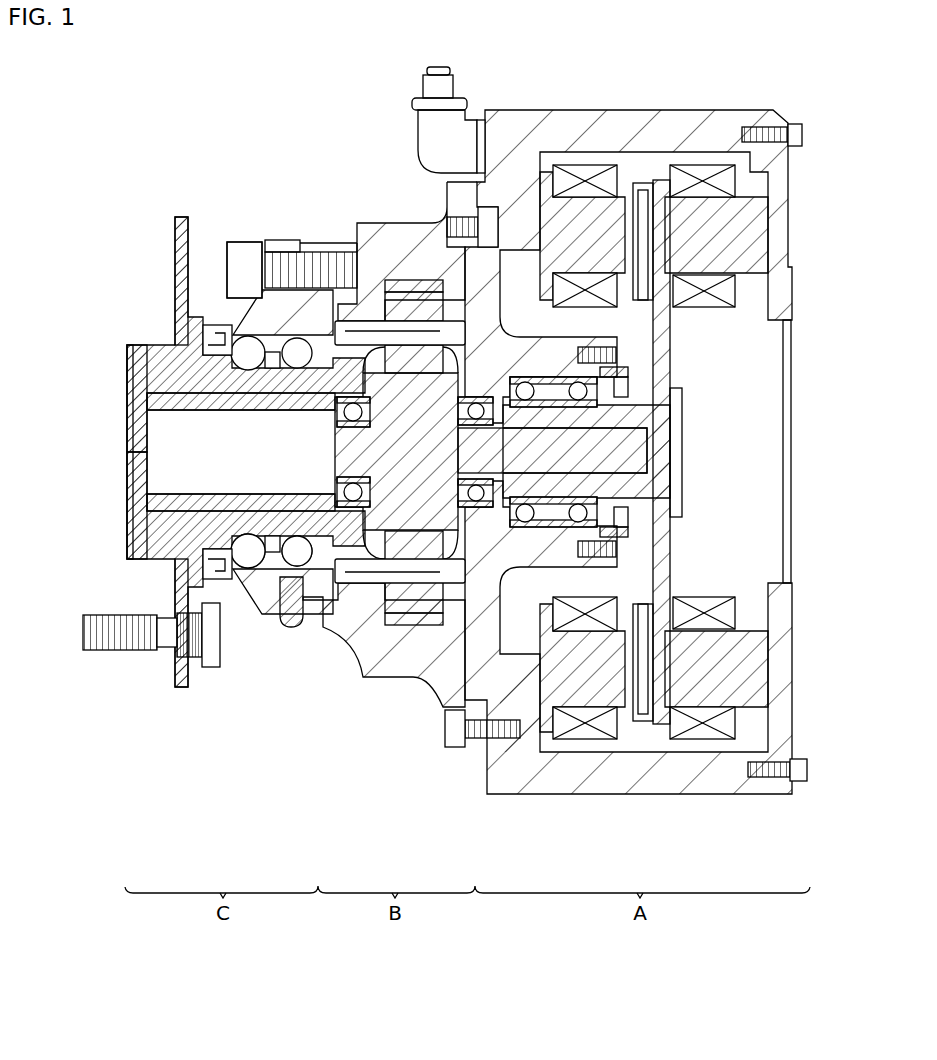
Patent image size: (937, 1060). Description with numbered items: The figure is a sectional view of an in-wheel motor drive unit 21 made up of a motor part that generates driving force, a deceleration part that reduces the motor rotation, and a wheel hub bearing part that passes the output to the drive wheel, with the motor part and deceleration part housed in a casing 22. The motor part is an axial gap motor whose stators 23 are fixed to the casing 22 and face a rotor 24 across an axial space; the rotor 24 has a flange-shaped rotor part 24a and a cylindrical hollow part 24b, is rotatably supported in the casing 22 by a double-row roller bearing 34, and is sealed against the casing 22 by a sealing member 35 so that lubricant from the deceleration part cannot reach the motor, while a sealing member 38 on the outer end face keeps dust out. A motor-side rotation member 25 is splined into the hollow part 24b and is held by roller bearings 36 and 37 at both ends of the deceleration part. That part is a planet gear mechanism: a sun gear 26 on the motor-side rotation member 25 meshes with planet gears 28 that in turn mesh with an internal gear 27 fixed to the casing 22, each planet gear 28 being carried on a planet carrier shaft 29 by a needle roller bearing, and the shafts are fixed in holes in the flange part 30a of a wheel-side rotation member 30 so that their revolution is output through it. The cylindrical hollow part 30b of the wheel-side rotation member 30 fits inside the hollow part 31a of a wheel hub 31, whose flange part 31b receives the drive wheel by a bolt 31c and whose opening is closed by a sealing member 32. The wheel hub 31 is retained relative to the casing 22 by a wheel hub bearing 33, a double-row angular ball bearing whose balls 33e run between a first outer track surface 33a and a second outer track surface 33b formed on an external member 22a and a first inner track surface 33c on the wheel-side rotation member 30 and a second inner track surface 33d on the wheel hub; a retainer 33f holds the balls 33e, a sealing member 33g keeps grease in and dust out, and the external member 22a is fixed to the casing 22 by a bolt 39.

The in-wheel motor drive unit 21 is at (249, 100).
The casing 22 is at (658, 108).
The external member 22a is at (295, 252).
The stators 23 is at (722, 237).
The rotor 24 is at (684, 530).
The rotor part 24a is at (648, 700).
The hollow part 24b is at (656, 410).
The motor-side rotation member 25 is at (628, 450).
The sun gear 26 is at (520, 660).
The internal gear 27 is at (405, 613).
The planet gears 28 is at (415, 280).
The planet carrier shaft 29 is at (357, 508).
The wheel-side rotation member 30 is at (162, 503).
The flange part 30a is at (376, 345).
The hollow part 30b is at (170, 447).
The wheel hub 31 is at (141, 342).
The hollow part 31a is at (130, 420).
The flange part 31b is at (178, 216).
The bolt 31c is at (84, 628).
The sealing member 32 is at (128, 470).
The wheel hub bearing 33 is at (250, 603).
The first outer track surface 33a is at (322, 292).
The second outer track surface 33b is at (260, 298).
The first inner track surface 33c is at (288, 628).
The second inner track surface 33d is at (250, 568).
The balls 33e is at (298, 566).
The retainer 33f is at (204, 562).
The sealing member 33g is at (215, 324).
The double-row roller bearing 34 is at (535, 377).
The sealing member 35 is at (612, 367).
The roller bearing 36 is at (476, 395).
The roller bearing 37 is at (360, 322).
The sealing member 38 is at (792, 355).
The bolt 39 is at (243, 262).